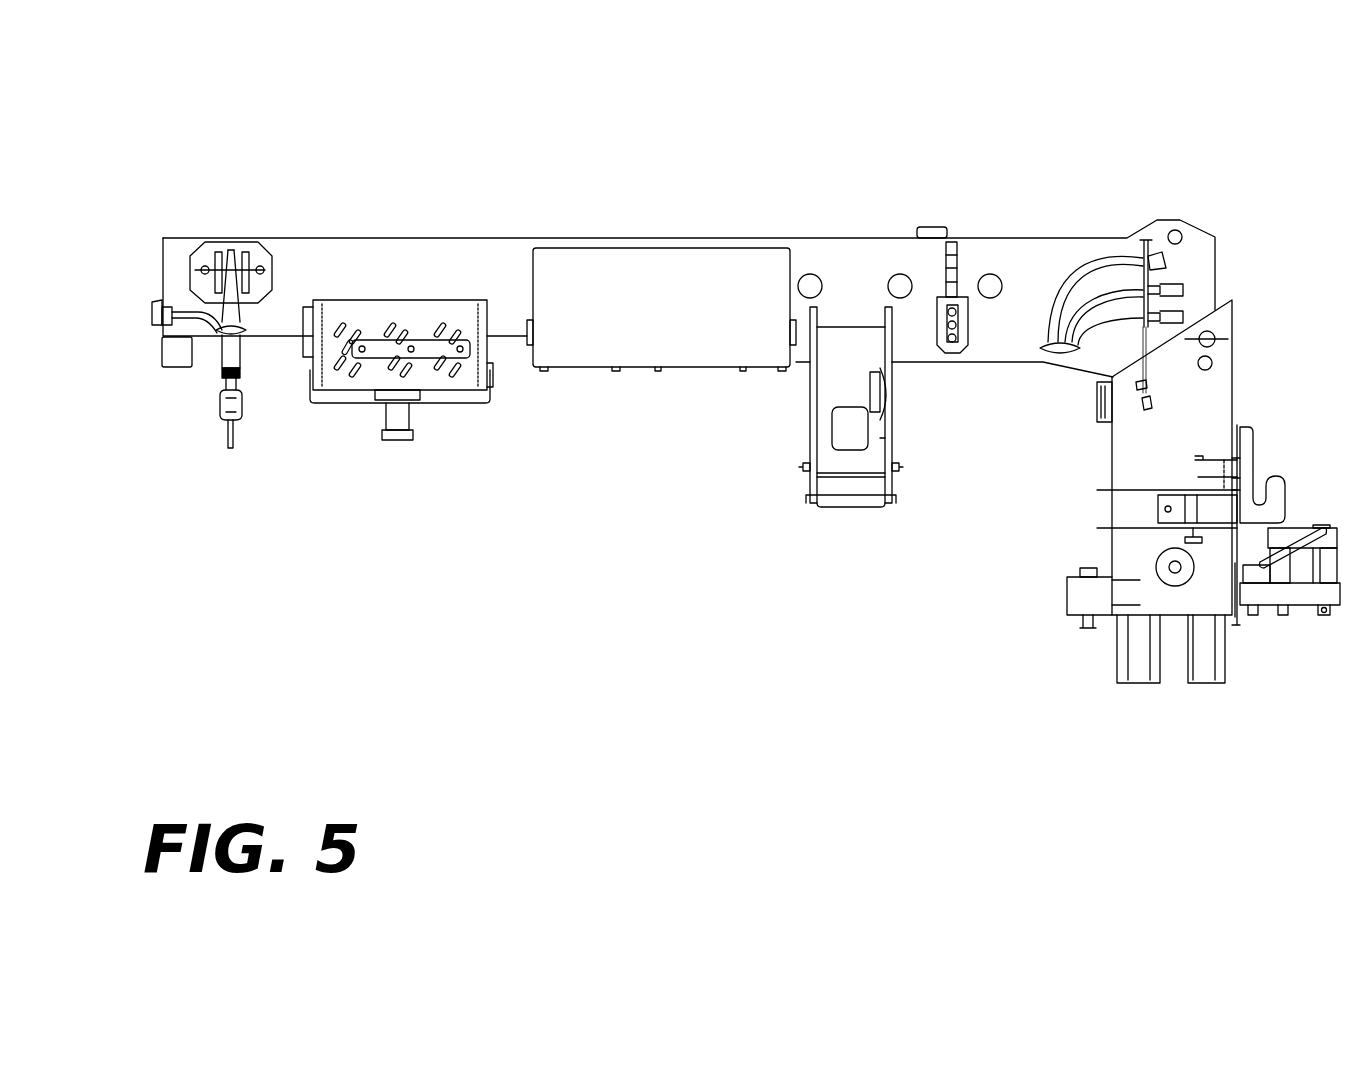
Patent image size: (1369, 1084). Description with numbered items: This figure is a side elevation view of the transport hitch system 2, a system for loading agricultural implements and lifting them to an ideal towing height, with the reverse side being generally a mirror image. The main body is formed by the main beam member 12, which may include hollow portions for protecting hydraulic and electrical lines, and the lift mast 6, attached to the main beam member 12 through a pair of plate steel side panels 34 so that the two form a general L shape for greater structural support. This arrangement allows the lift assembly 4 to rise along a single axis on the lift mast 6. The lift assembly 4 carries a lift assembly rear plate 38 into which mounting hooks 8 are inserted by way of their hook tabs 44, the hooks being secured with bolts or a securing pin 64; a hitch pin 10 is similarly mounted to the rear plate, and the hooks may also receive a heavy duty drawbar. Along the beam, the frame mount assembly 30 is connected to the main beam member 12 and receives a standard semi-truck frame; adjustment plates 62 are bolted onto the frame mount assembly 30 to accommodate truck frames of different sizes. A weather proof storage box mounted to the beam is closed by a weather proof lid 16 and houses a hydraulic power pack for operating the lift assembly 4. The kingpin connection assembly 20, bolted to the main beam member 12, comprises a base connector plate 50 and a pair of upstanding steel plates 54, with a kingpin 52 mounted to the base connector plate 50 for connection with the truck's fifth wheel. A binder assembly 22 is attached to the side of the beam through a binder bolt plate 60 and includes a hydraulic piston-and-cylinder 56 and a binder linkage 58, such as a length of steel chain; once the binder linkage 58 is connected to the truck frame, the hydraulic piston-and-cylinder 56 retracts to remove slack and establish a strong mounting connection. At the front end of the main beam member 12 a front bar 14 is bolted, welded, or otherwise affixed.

The transport hitch system 2 is at (508, 688).
The lift assembly 4 is at (1258, 652).
The lift mast 6 is at (1115, 655).
The mounting hooks 8 is at (1255, 443).
The hitch pin 10 is at (1335, 528).
The main beam member 12 is at (445, 236).
The front bar 14 is at (160, 348).
The weather proof lid 16 is at (644, 295).
The kingpin connection assembly 20 is at (515, 405).
The binder assembly 22 is at (188, 435).
The frame mount assembly 30 is at (810, 378).
The side panels 34 is at (1046, 277).
The lift assembly rear plate 38 is at (1237, 425).
The hook tabs 44 is at (1158, 508).
The base connector plate 50 is at (332, 403).
The kingpin 52 is at (410, 425).
The upstanding steel plates 54 is at (438, 302).
The hydraulic piston-and-cylinder 56 is at (222, 365).
The binder linkage 58 is at (242, 405).
The binder bolt plate 60 is at (228, 242).
The adjustment plates 62 is at (805, 483).
The securing pin 64 is at (1200, 543).